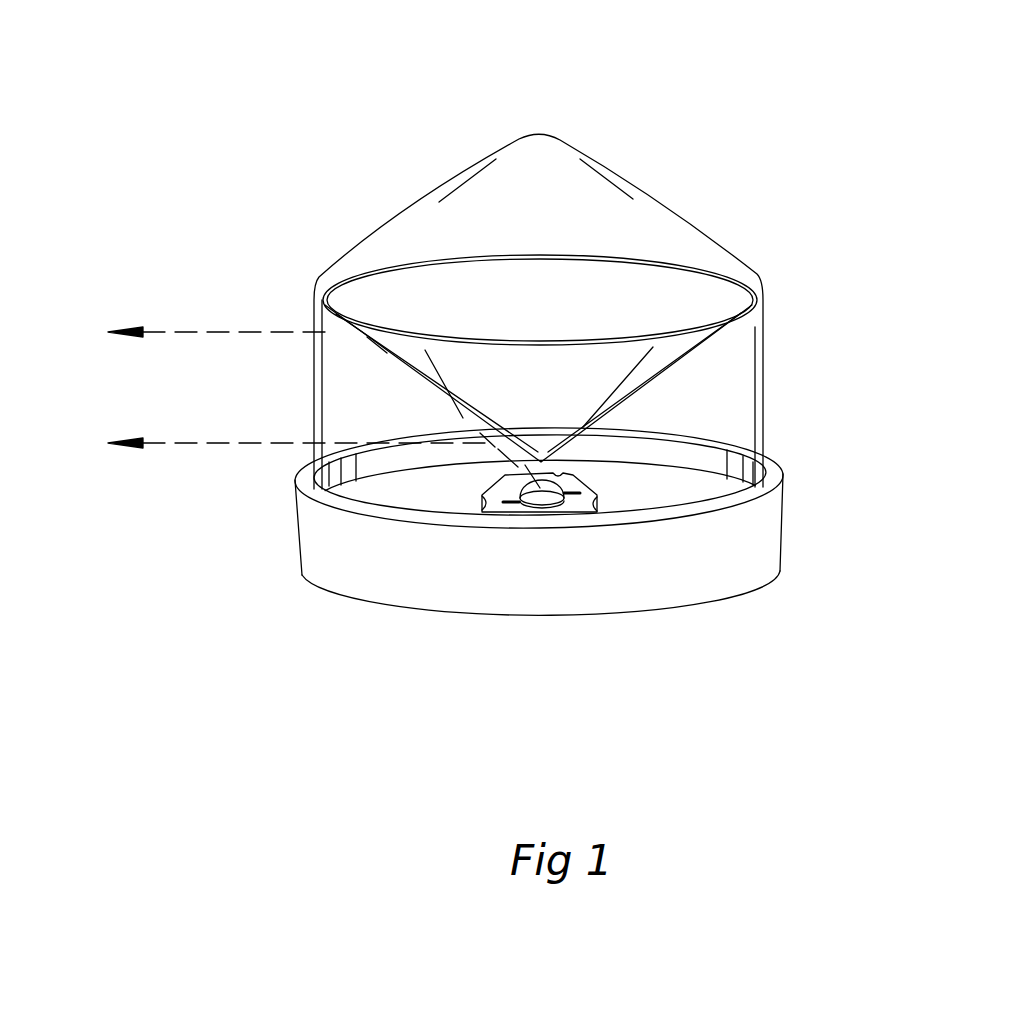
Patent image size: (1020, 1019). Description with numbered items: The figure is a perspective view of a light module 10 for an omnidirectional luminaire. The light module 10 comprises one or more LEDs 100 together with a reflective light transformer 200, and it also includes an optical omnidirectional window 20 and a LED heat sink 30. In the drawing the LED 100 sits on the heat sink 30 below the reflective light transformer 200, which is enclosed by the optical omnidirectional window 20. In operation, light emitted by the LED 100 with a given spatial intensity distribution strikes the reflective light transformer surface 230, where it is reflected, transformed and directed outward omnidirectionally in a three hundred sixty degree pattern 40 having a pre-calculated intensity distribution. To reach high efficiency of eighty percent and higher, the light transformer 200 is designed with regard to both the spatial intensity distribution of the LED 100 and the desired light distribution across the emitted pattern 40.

The light module 10 is at (557, 107).
The optical omnidirectional window 20 is at (763, 353).
The LED heat sink 30 is at (777, 510).
The 360° pattern 40 is at (103, 327).
The LED 100 is at (497, 486).
The reflective light transformer 200 is at (502, 317).
The reflective light transformer surface 230 is at (452, 395).